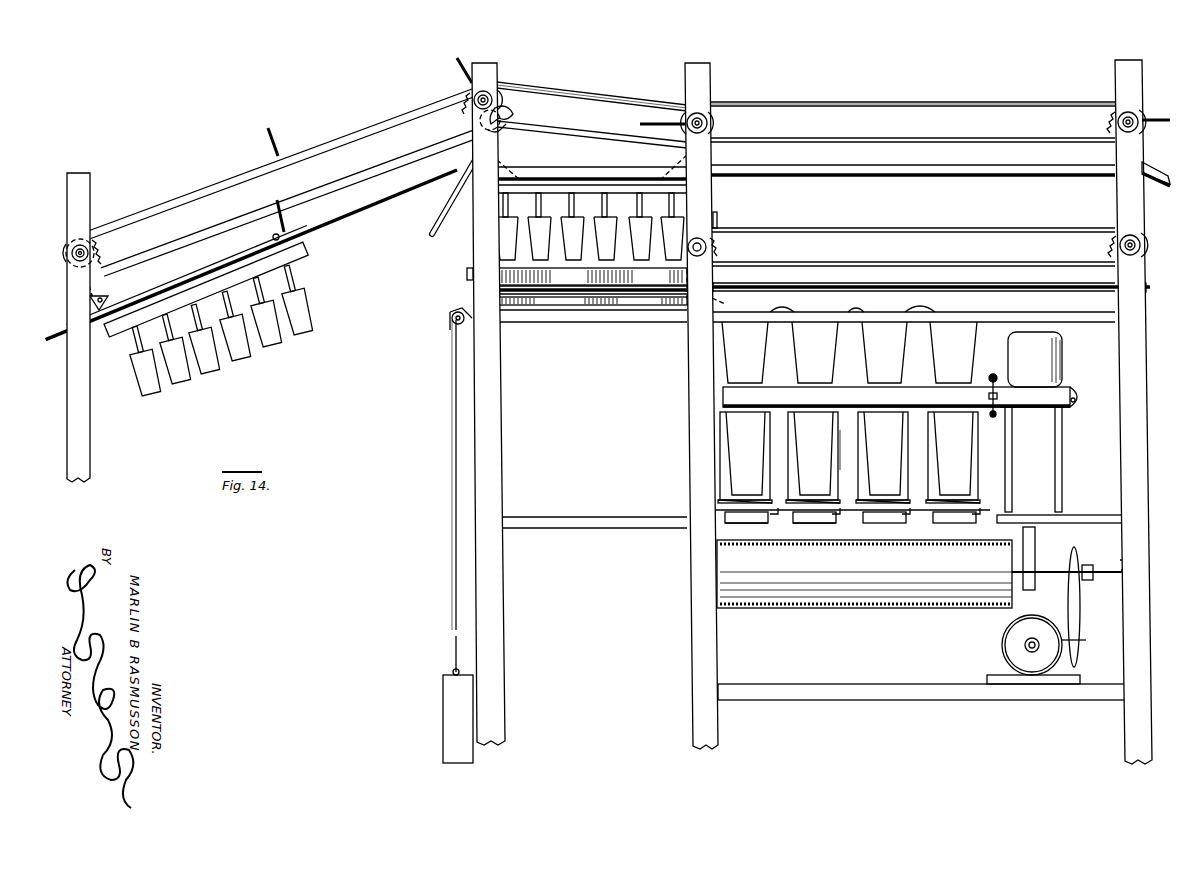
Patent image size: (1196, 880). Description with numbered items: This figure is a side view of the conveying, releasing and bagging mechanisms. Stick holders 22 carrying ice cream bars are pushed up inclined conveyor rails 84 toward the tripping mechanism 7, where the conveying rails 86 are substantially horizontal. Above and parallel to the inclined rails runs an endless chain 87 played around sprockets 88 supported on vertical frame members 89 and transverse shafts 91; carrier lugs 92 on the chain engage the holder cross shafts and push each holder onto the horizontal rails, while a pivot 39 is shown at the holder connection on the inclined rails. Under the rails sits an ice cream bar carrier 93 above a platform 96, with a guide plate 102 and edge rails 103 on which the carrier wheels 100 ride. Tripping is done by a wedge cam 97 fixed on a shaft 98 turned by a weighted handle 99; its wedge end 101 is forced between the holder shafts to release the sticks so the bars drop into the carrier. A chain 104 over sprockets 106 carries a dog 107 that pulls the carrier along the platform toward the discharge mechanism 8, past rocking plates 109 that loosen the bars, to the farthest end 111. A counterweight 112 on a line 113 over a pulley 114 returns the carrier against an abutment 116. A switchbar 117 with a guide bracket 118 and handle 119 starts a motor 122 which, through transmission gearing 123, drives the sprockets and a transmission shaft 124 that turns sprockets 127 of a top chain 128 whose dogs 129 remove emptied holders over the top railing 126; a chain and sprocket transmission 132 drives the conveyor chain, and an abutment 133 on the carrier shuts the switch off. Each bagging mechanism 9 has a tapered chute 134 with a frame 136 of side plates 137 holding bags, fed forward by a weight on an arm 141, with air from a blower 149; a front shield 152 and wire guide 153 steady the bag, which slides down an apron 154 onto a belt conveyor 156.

The tripping mechanism 7 is at (545, 86).
The discharge mechanism 8 is at (977, 92).
The bagging mechanism 9 is at (714, 440).
The stick holder 22 is at (305, 254).
The pivot 39 is at (272, 236).
The inclined conveyor rails 84 is at (180, 285).
The horizontal rails 86 is at (578, 170).
The endless chain 87 is at (228, 178).
The sprockets 88 is at (98, 247).
The vertical frame members 89 is at (84, 184).
The transverse shafts 91 is at (66, 262).
The carrier lugs 92 is at (457, 66).
The ice cream bar carrier 93 is at (555, 312).
The platform 96 is at (634, 323).
The wedge cam 97 is at (512, 121).
The shaft 98 is at (478, 143).
The handle 99 is at (432, 232).
The wheels 100 is at (482, 275).
The wedge end 101 is at (506, 129).
The guide plate 102 is at (860, 311).
The rails 103 is at (480, 290).
The chain 104 is at (955, 230).
The sprockets 106 is at (714, 246).
The dog 107 is at (722, 215).
The rocking plate 109 is at (790, 310).
The farthest end 111 is at (1146, 288).
The counterweight 112 is at (445, 720).
The line 113 is at (451, 575).
The pulley 114 is at (449, 320).
The abutment 116 is at (466, 268).
The switchbar 117 is at (882, 288).
The guide bracket 118 is at (714, 284).
The handle 119 is at (678, 312).
The motor 122 is at (1004, 641).
The transmission gearing 123 is at (1078, 622).
The transmission shaft 124 is at (1136, 462).
The top railing 126 is at (1070, 166).
The sprockets 127 is at (712, 123).
The top chain 128 is at (912, 106).
The dogs 129 is at (655, 122).
The chain and sprocket transmission 132 is at (608, 98).
The abutment 133 is at (733, 303).
The chute 134 is at (760, 384).
The frame 136 is at (830, 524).
The side plates 137 is at (854, 458).
The arm 141 is at (893, 402).
The motor driven blower 149 is at (1063, 367).
The front shield 152 is at (757, 455).
The wire guide 153 is at (930, 515).
The inclined apron 154 is at (755, 524).
The belt conveyor 156 is at (853, 542).